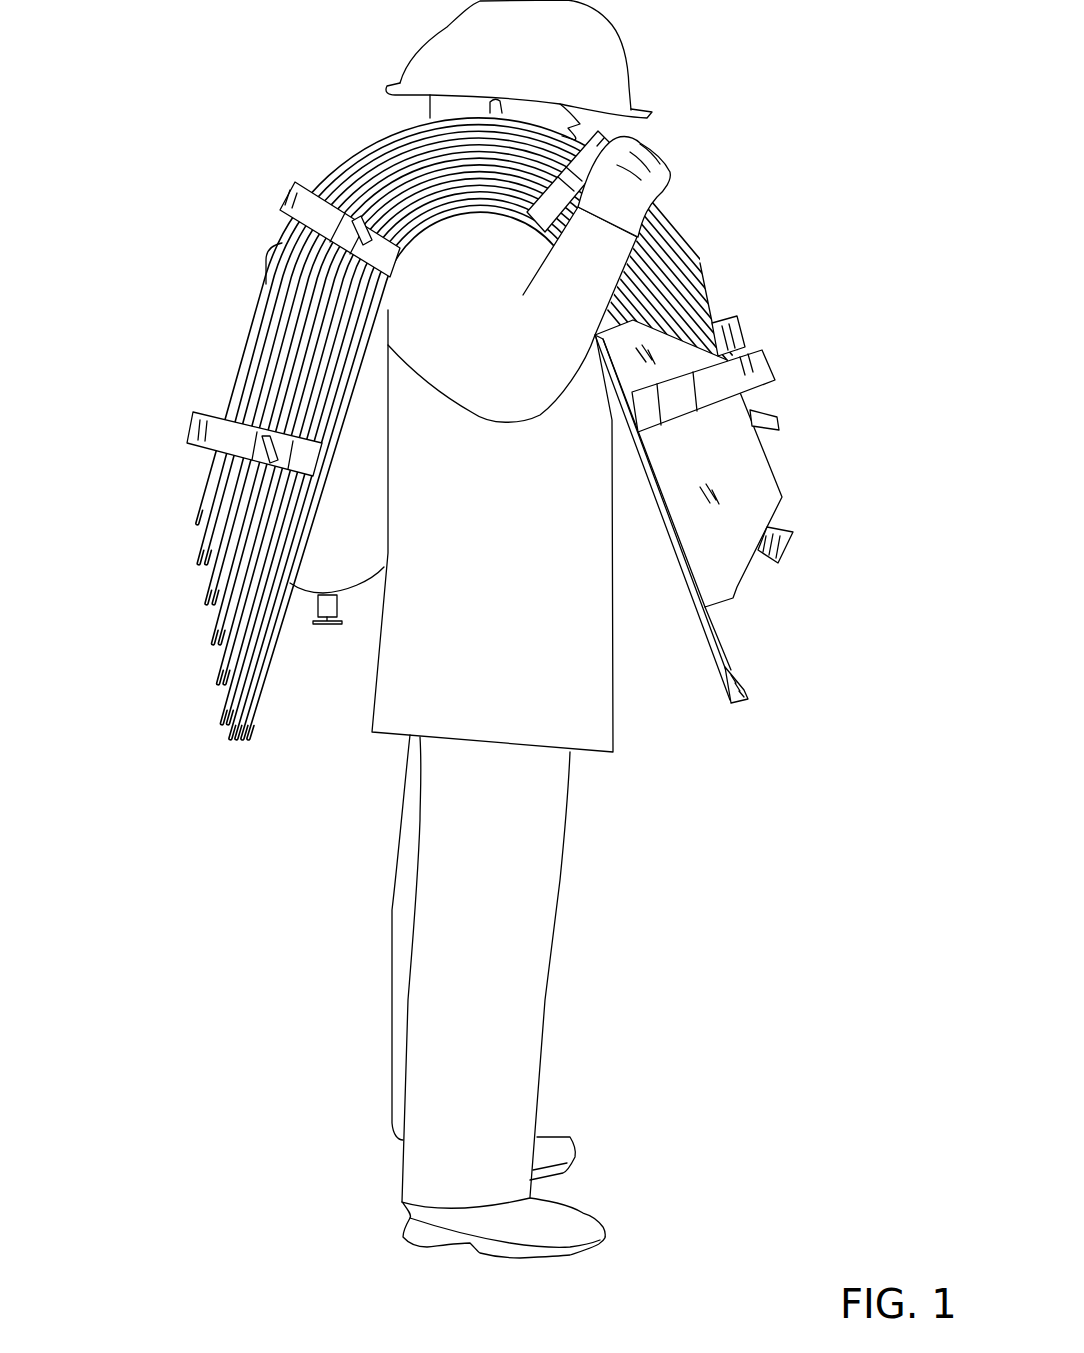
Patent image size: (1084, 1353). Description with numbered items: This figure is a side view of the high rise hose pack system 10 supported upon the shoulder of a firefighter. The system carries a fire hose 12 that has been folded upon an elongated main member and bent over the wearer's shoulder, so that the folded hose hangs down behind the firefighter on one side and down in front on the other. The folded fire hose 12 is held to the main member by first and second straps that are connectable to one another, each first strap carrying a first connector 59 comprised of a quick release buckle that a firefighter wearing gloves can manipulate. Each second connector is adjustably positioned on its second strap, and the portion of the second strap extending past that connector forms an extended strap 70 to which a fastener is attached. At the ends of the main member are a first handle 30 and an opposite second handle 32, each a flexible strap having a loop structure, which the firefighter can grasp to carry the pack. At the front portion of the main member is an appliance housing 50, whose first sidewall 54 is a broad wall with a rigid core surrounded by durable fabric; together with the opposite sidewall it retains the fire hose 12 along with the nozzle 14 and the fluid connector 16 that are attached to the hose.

The high rise hose pack system 10 is at (197, 108).
The fire hose 12 is at (233, 365).
The nozzle 14 is at (777, 430).
The fluid connector 16 is at (789, 540).
The first handle 30 is at (238, 730).
The second handle 32 is at (748, 700).
The appliance housing 50 is at (762, 597).
The first sidewall 54 is at (757, 472).
The first connector 59 is at (343, 262).
The extended strap 70 is at (172, 423).